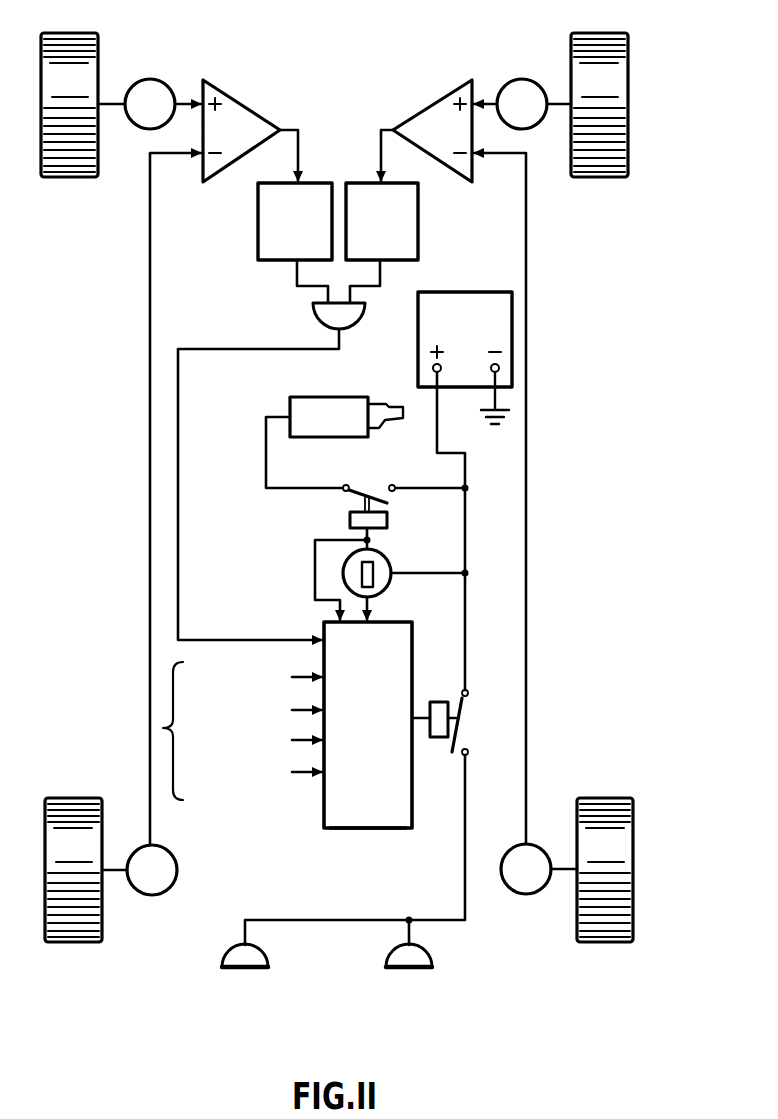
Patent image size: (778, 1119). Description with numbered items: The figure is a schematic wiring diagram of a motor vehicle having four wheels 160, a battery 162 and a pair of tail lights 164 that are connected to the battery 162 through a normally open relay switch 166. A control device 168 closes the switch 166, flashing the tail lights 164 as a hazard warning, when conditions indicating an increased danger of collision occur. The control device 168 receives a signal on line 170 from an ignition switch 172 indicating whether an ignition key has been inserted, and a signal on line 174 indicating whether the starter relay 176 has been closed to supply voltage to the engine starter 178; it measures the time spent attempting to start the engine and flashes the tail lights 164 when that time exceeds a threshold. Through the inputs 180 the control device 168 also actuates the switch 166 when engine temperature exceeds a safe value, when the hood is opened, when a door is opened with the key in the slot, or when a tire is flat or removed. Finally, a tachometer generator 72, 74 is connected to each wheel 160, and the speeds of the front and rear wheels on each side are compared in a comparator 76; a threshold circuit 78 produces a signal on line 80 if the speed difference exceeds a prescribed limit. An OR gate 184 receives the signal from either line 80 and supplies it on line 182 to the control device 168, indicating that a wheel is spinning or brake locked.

The wheel 160 is at (74, 33).
The tachometer generator 72 is at (152, 80).
The tachometer generator 74 is at (177, 870).
The comparator 76 is at (245, 112).
The threshold circuit (Schmitt trigger) 78 is at (257, 228).
The line 80 is at (364, 290).
The OR gate 184 is at (316, 308).
The line 182 is at (186, 568).
The battery 162 is at (492, 292).
The engine starter 178 is at (346, 397).
The starter relay 176 is at (373, 481).
The line 174 is at (313, 588).
The ignition switch 172 is at (386, 561).
The line 170 is at (385, 621).
The control device 168 is at (356, 830).
The inputs 180 is at (163, 728).
The relay switch 166 is at (460, 732).
The tail lights 164 is at (386, 966).